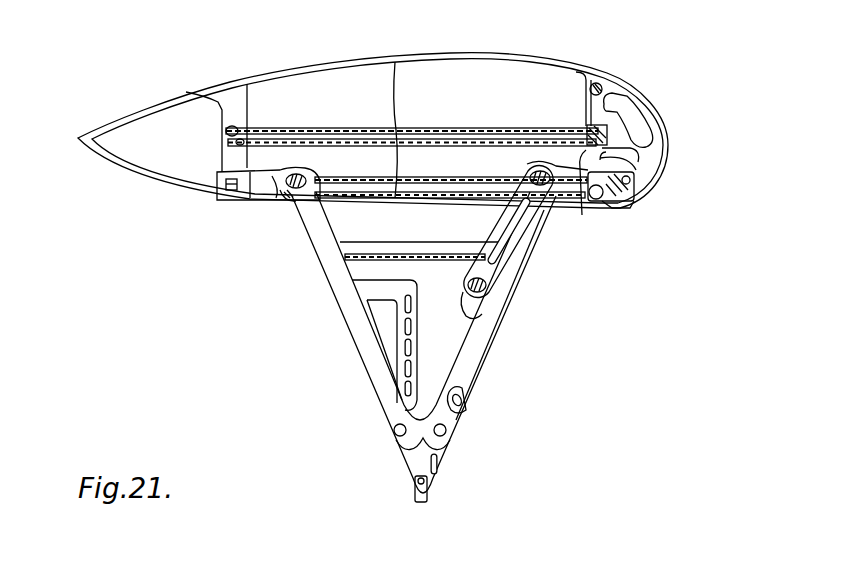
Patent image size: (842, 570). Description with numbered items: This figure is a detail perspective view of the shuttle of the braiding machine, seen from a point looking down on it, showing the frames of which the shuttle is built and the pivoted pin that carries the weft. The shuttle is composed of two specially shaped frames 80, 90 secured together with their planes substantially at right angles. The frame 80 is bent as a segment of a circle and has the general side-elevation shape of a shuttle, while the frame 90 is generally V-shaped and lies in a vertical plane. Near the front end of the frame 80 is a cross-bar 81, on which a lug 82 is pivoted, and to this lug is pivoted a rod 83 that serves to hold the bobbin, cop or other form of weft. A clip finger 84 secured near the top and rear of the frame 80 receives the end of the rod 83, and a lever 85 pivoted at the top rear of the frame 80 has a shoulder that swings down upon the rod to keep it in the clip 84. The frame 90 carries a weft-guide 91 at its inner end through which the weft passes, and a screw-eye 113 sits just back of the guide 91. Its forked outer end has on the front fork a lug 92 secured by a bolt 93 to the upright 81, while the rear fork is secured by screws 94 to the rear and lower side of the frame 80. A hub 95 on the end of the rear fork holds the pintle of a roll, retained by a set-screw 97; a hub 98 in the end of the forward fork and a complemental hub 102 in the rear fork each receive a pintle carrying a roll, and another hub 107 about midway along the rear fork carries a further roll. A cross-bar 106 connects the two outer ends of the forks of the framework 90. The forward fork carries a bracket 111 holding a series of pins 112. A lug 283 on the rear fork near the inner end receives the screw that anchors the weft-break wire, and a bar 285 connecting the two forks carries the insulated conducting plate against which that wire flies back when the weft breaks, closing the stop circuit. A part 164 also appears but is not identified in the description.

The frame 80 is at (112, 118).
The cross-bar 81 is at (188, 92).
The lug 82 is at (224, 140).
The rod 83 is at (322, 129).
The clip finger 84 is at (584, 178).
The lever 85 is at (638, 132).
The frame 90 is at (375, 370).
The weft-guide 91 is at (424, 503).
The lug 92 is at (249, 200).
The bolt 93 is at (218, 199).
The screws 94 is at (633, 190).
The hub 95 is at (614, 209).
The set-screw 97 is at (636, 161).
The hub 98 is at (291, 198).
The complemental hub 102 is at (556, 200).
The cross-bar 106 is at (396, 60).
The hub 107 is at (483, 293).
The bracket 111 is at (377, 292).
The pins 112 is at (414, 326).
The screw-eye 113 is at (438, 468).
The bar 164 is at (363, 244).
The lug 283 is at (462, 402).
The bar 285 is at (433, 250).